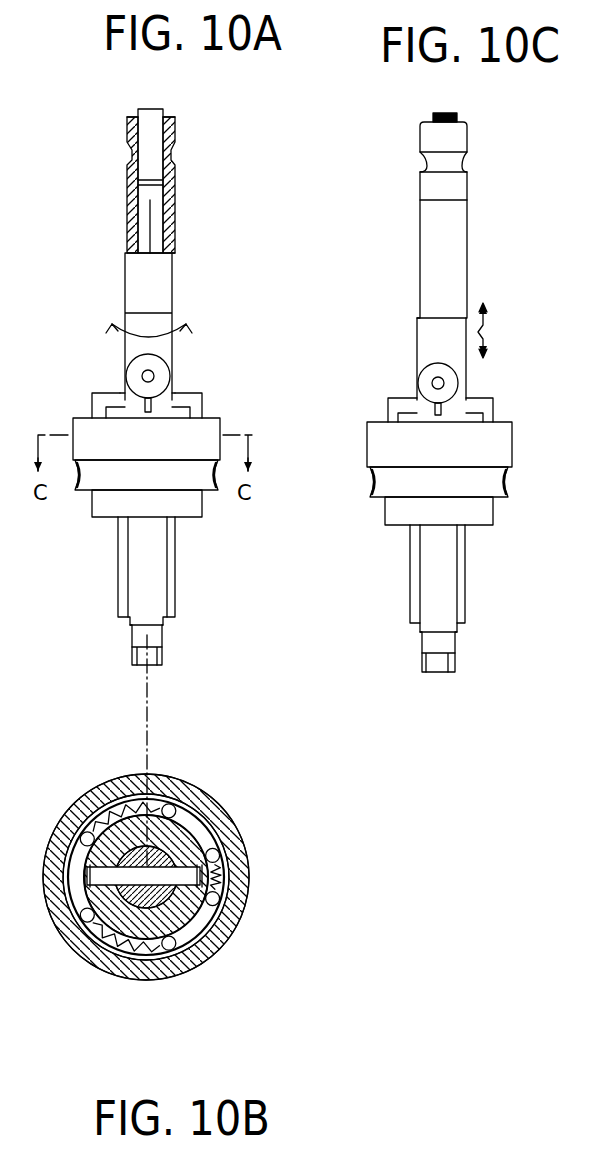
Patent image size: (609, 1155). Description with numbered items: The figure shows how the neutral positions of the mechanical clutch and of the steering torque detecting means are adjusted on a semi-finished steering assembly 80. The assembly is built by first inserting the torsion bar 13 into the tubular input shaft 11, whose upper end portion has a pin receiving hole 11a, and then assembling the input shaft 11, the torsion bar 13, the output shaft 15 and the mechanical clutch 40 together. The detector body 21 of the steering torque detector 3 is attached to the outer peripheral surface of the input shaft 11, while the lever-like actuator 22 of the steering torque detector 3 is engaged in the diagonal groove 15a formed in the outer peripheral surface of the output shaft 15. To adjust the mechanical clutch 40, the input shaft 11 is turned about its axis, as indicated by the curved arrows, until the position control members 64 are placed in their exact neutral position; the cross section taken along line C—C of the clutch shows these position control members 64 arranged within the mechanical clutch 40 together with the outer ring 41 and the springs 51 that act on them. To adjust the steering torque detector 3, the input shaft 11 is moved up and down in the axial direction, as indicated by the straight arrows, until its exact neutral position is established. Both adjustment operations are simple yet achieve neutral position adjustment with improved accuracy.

In FIG. 10A, the semi-finished steering assembly 80 is at (96, 143).
In FIG. 10A, the input shaft 11 is at (172, 151).
In FIG. 10C, the input shaft 11 is at (462, 221).
In FIG. 10A, the pin receiving hole 11a is at (172, 137).
In FIG. 10A, the torsion bar 13 is at (152, 206).
In FIG. 10A, the steering torque detector 3 is at (185, 353).
In FIG. 10C, the steering torque detector 3 is at (421, 357).
In FIG. 10A, the detector body 21 is at (160, 375).
In FIG. 10C, the detector body 21 is at (455, 384).
In FIG. 10A, the lever-like actuator 22 is at (150, 412).
In FIG. 10C, the lever-like actuator 22 is at (442, 414).
In FIG. 10A, the diagonal groove 15a is at (180, 412).
In FIG. 10C, the diagonal groove 15a is at (472, 413).
In FIG. 10A, the position control members 64 is at (98, 410).
In FIG. 10C, the position control members 64 is at (392, 417).
In FIG. 10B, the position control members 64 is at (222, 824).
In FIG. 10A, the mechanical clutch 40 is at (70, 421).
In FIG. 10C, the mechanical clutch 40 is at (519, 448).
In FIG. 10B, the mechanical clutch 40 is at (207, 773).
In FIG. 10A, the output shaft 15 is at (150, 562).
In FIG. 10C, the output shaft 15 is at (447, 585).
In FIG. 10B, the outer ring 41 is at (64, 826).
In FIG. 10B, the spring 51 is at (180, 806).